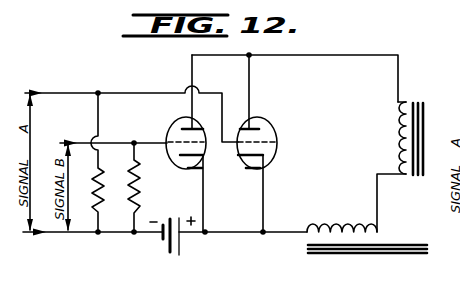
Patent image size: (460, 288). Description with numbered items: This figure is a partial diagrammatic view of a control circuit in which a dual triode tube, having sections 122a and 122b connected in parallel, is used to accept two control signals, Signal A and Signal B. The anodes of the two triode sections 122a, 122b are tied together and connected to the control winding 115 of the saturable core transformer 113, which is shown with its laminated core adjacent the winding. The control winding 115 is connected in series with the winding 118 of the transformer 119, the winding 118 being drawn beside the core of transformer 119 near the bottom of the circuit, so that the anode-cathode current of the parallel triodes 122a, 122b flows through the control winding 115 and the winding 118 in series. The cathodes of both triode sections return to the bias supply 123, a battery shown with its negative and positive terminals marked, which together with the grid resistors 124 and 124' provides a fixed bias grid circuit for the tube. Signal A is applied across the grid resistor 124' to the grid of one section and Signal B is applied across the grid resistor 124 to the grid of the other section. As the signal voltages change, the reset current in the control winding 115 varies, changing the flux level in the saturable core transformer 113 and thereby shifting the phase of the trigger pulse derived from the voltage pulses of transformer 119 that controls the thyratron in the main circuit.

The saturable core transformer 113 is at (424, 129).
The control winding 115 is at (397, 134).
The winding 118 is at (337, 226).
The transformer 119 is at (388, 243).
The triode 122a is at (176, 129).
The triode 122b is at (273, 122).
The bias supply 123 is at (181, 244).
The grid resistor 124 is at (152, 187).
The grid resistor 124' is at (88, 162).